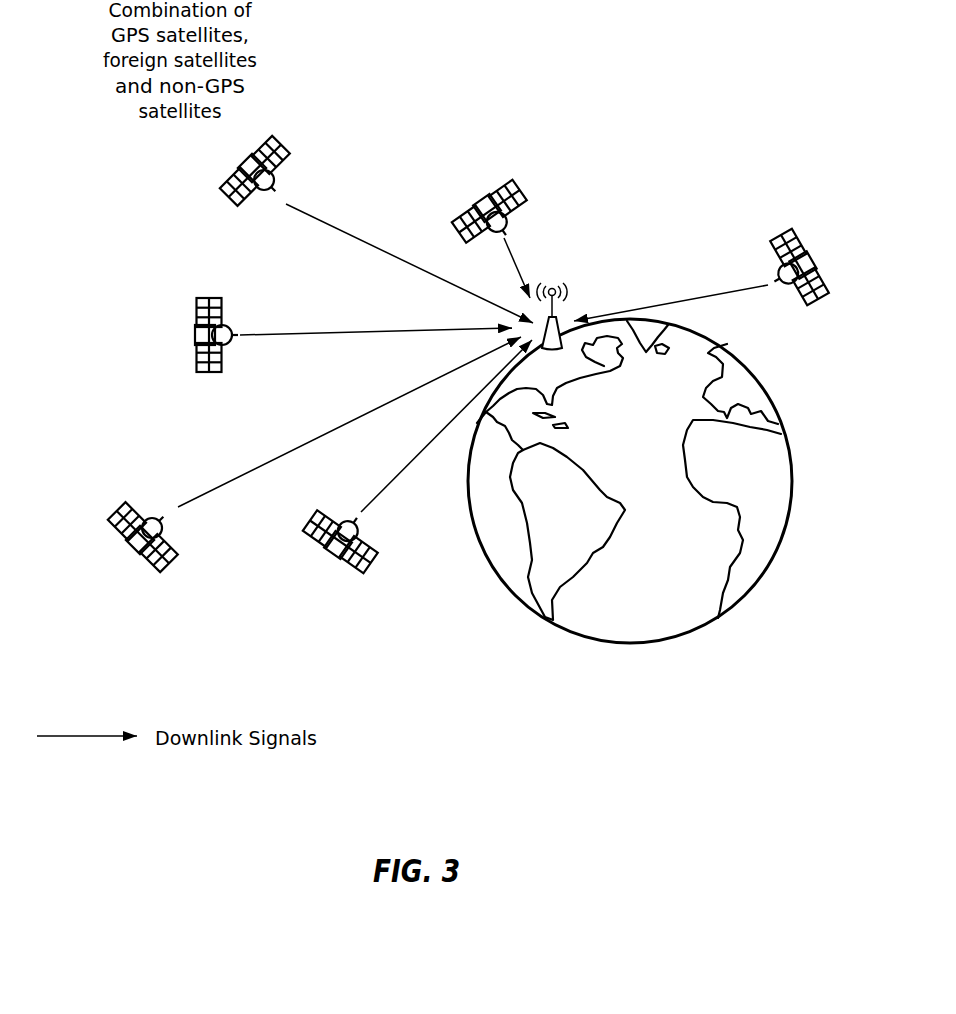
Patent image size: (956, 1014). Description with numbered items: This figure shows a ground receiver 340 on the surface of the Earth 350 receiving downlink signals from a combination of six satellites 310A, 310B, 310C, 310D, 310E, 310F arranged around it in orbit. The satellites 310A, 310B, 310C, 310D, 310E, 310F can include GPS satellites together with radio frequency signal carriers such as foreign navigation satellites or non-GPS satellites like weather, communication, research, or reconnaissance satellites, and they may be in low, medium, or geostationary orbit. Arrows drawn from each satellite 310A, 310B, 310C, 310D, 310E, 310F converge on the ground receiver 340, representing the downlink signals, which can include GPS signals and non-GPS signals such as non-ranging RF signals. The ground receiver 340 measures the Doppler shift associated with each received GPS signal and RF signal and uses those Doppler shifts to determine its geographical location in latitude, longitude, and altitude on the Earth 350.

The satellite 310A is at (110, 500).
The satellite 310B is at (198, 302).
The satellite 310C is at (288, 137).
The satellite 310D is at (530, 190).
The satellite 310E is at (793, 230).
The satellite 310F is at (385, 568).
The ground receiver 340 is at (572, 322).
The Earth 350 is at (785, 435).